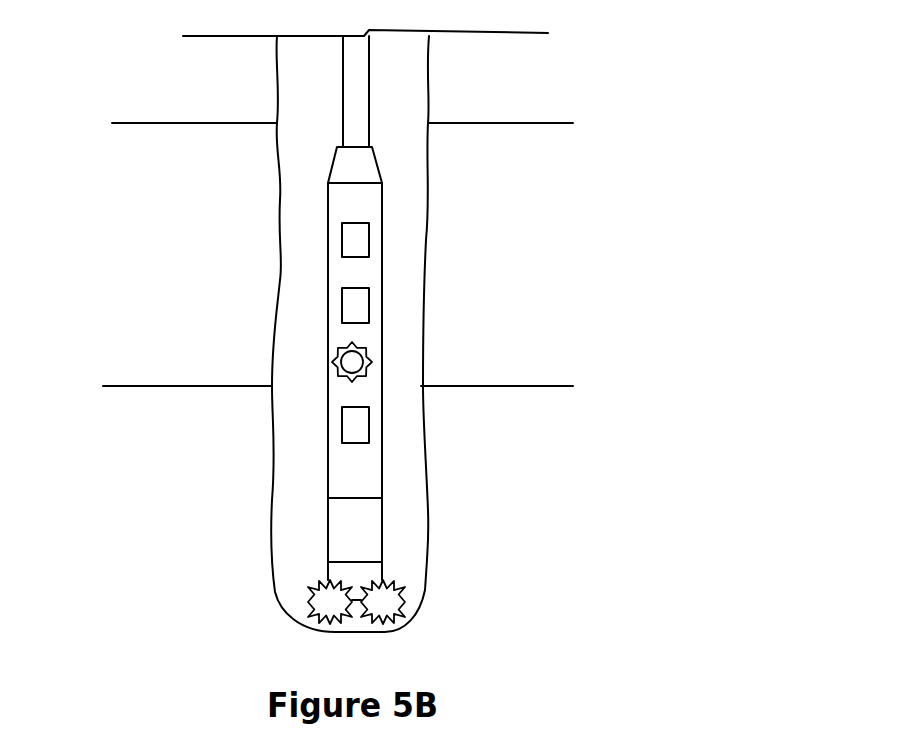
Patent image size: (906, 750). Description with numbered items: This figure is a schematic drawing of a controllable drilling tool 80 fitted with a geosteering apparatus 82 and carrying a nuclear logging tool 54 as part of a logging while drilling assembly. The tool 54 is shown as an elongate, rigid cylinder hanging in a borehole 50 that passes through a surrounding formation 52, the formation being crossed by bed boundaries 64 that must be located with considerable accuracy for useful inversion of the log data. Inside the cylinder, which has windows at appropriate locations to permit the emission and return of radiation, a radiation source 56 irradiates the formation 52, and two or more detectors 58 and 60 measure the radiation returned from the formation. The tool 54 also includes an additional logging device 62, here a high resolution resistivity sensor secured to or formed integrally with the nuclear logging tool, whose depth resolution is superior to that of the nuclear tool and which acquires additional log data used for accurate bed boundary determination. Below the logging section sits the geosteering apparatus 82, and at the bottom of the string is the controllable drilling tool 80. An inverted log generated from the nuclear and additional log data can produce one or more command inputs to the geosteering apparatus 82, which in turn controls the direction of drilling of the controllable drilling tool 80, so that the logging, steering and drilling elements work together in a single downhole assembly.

The borehole 50 is at (280, 166).
The formation 52 is at (569, 283).
The nuclear logging tool 54 is at (303, 304).
The radiation source 56 is at (371, 353).
The detector 58 is at (369, 237).
The detector 60 is at (369, 301).
The additional logging device 62 is at (369, 414).
The bed boundaries 64 is at (148, 121).
The controllable drilling tool 80 is at (385, 568).
The geosteering apparatus 82 is at (373, 520).